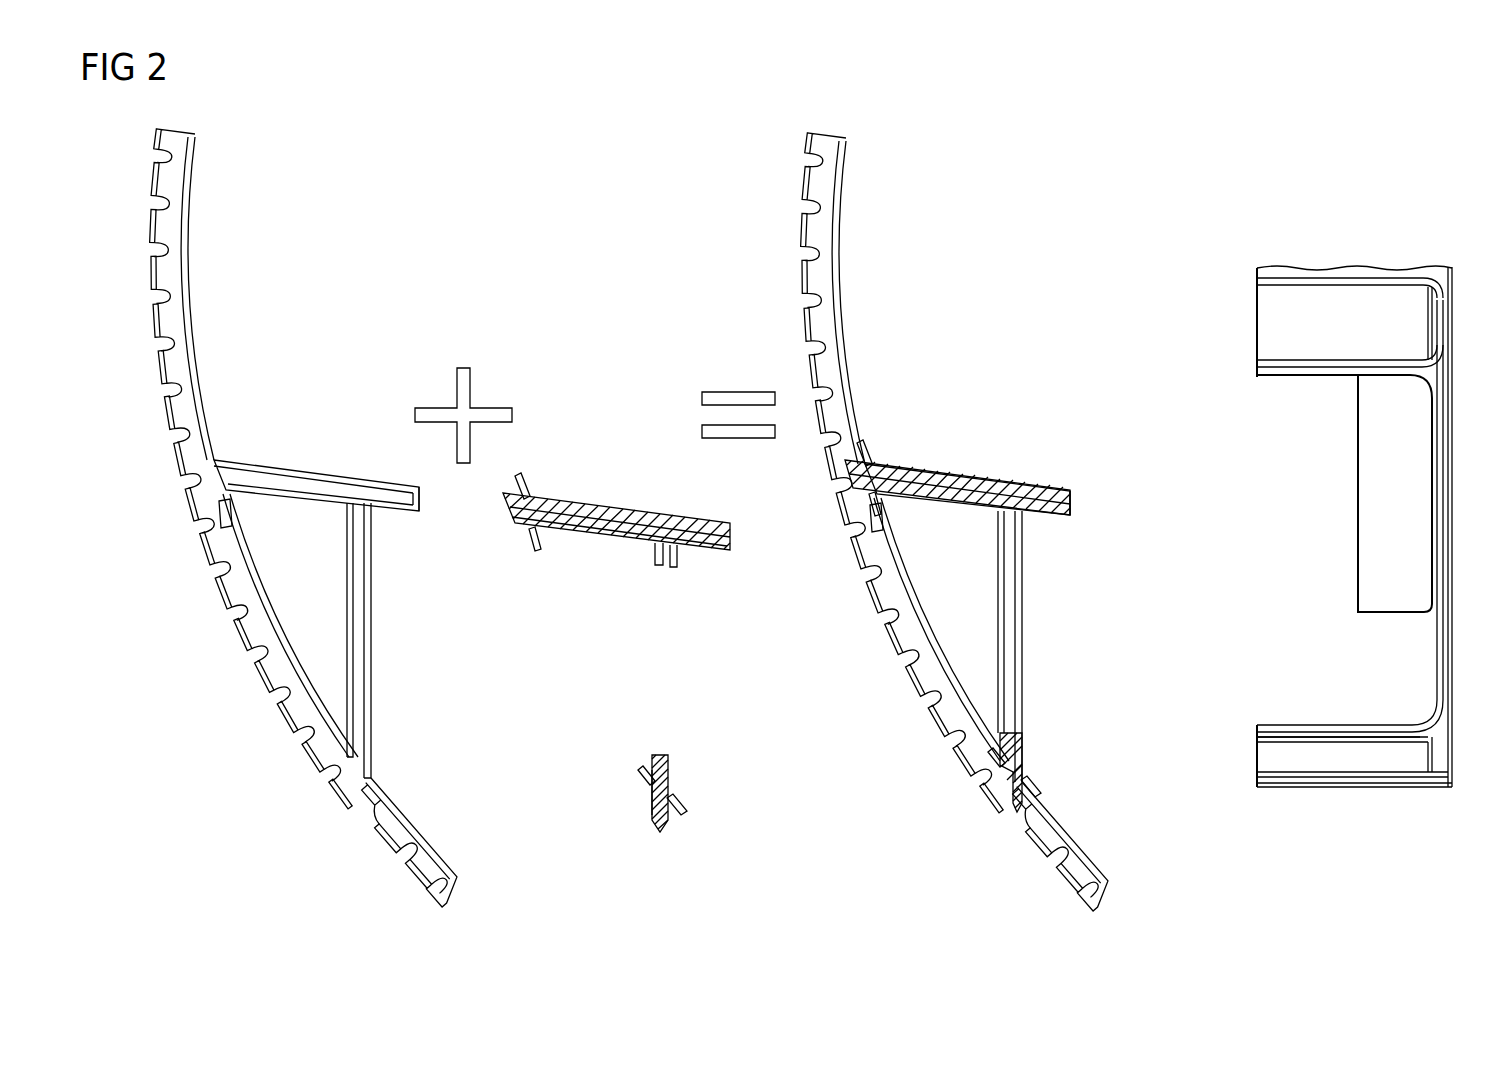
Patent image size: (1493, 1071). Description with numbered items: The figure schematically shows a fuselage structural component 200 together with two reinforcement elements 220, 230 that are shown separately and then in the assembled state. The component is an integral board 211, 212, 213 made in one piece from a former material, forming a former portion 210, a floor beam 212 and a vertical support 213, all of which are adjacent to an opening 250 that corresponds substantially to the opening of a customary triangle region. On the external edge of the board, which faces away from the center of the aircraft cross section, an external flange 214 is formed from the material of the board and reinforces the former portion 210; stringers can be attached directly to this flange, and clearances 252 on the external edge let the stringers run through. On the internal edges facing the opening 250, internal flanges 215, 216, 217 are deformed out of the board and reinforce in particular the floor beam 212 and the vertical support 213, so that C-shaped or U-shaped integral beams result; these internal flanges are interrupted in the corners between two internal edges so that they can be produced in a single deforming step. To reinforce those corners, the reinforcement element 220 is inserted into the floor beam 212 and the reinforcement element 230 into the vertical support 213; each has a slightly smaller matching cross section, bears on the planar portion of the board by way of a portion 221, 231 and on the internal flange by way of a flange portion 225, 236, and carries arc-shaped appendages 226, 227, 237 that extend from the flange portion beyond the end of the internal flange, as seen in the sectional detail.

The fuselage structural component 200 is at (1040, 195).
The former portion 210 is at (228, 716).
The board portion (former portion of the integral board) 211 is at (186, 352).
The floor beam 212 is at (268, 488).
The vertical support 213 is at (357, 681).
The external flange 214 is at (153, 318).
The internal flange 215 is at (345, 490).
The internal flange 216 is at (366, 614).
The internal flange 217 is at (178, 447).
The reinforcement element 220 is at (975, 558).
The portion of the reinforcement element 221 is at (622, 520).
The flange portion 225 is at (600, 549).
The appendage 226 is at (673, 568).
The appendage 227 is at (522, 472).
The reinforcement element 230 is at (803, 780).
The portion of the reinforcement element 231 is at (660, 755).
The flange portion 236 is at (670, 773).
The appendage 237 is at (640, 773).
The opening 250 is at (256, 588).
The clearances 252 is at (168, 200).